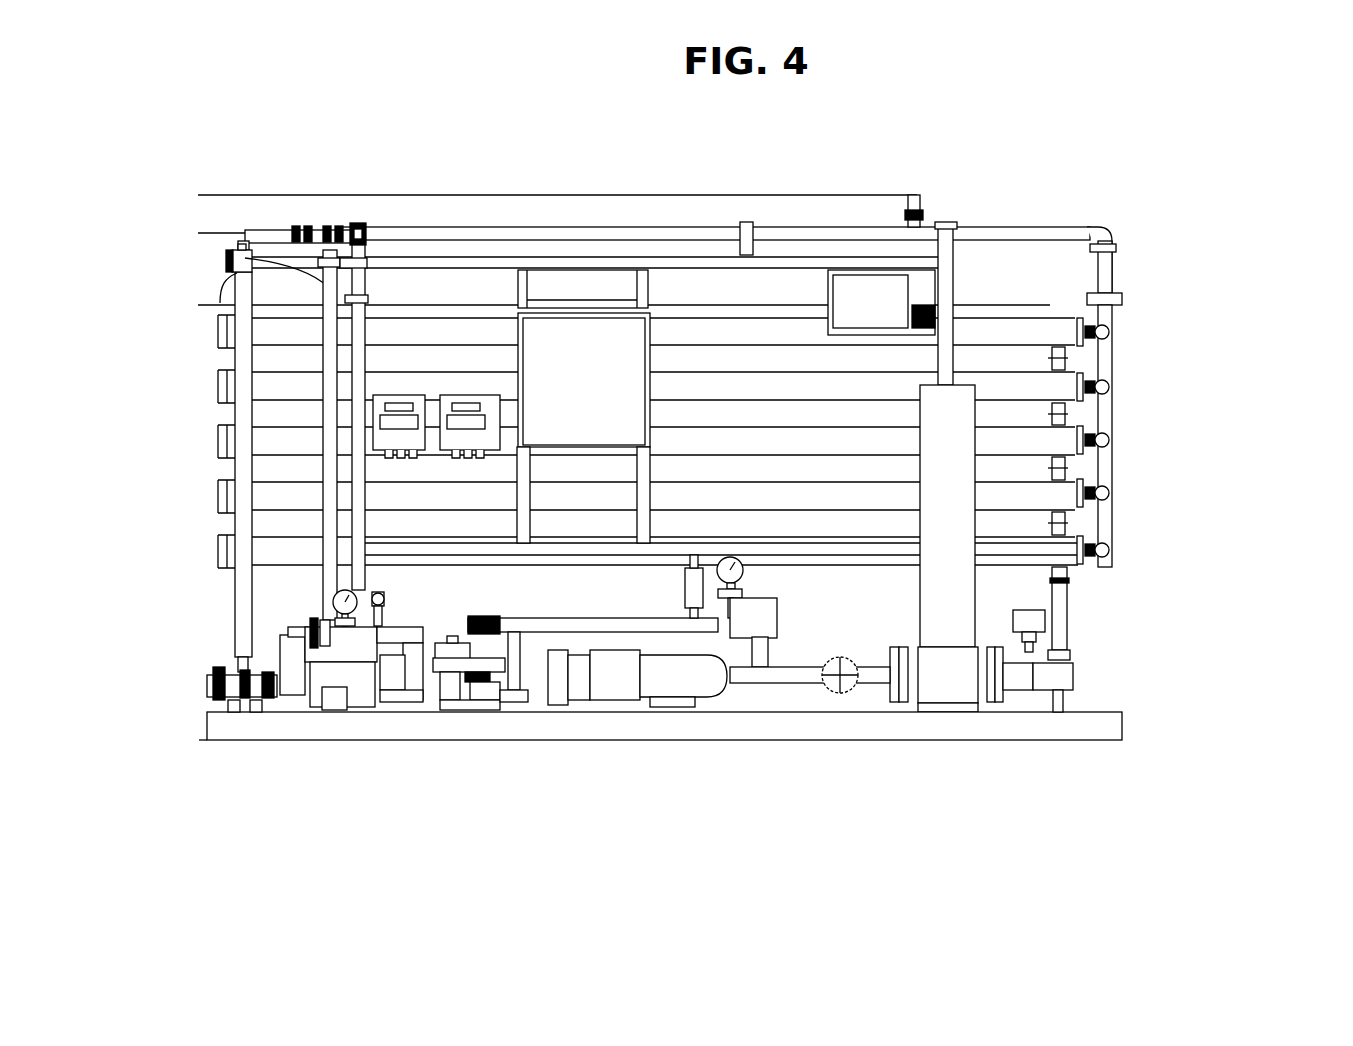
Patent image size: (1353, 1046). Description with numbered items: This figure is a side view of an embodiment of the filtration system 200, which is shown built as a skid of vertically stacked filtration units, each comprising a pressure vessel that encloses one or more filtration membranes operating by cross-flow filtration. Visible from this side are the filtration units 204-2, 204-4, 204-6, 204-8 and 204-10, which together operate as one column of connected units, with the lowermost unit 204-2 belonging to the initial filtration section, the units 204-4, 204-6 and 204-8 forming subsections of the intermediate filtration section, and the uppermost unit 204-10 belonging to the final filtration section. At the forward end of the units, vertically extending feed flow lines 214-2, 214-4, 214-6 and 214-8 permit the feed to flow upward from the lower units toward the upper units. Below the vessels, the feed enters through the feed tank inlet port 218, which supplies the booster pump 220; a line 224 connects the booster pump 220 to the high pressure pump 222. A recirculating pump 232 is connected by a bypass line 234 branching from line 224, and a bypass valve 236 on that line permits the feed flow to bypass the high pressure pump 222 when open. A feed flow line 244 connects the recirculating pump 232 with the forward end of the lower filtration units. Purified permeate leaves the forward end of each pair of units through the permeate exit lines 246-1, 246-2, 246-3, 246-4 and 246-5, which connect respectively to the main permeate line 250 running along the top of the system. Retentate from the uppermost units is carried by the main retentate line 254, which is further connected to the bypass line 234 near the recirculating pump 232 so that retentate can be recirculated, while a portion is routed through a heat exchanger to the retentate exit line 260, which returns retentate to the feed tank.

The filtration system 200 is at (1158, 318).
The filtration unit 204-2 is at (218, 555).
The filtration unit 204-4 is at (218, 500).
The filtration unit 204-6 is at (218, 447).
The filtration unit 204-8 is at (218, 392).
The filtration unit 204-10 is at (218, 337).
The vertical feed flow line 214-2 is at (1060, 525).
The vertical feed flow line 214-4 is at (1110, 490).
The vertical feed flow line 214-6 is at (1060, 415).
The vertical feed flow line 214-8 is at (1052, 358).
The feed tank inlet port 218 is at (207, 683).
The booster pump 220 is at (325, 680).
The high pressure pump 222 is at (658, 680).
The line 224 is at (408, 632).
The recirculating pump 232 is at (947, 677).
The bypass line 234 is at (578, 633).
The bypass valve 236 is at (473, 633).
The feed flow line 244 is at (1057, 618).
The permeate exit line 246-1 is at (1108, 560).
The permeate exit line 246-2 is at (1093, 500).
The permeate exit line 246-3 is at (1093, 447).
The permeate exit line 246-4 is at (1093, 395).
The permeate exit line 246-5 is at (1108, 340).
The main permeate line 250 is at (1100, 272).
The main retentate line 254 is at (237, 618).
The retentate exit line 260 is at (226, 262).